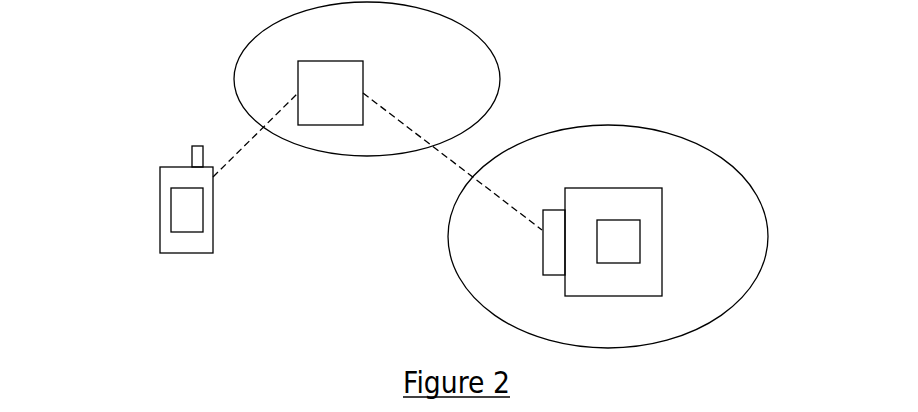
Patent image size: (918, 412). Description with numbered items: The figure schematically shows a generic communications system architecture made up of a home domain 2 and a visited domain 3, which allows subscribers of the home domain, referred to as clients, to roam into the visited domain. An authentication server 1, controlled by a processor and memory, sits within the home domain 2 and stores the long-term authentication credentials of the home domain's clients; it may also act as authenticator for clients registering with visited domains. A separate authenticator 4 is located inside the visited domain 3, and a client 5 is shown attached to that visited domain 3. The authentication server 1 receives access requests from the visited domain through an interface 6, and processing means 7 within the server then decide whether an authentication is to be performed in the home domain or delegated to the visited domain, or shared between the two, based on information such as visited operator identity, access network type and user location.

The authentication server 1 is at (657, 270).
The home domain 2 is at (618, 147).
The visited domain 3 is at (443, 8).
The authenticator 4 is at (317, 115).
The client 5 is at (163, 210).
The interface 6 is at (546, 248).
The processing means 7 is at (622, 240).